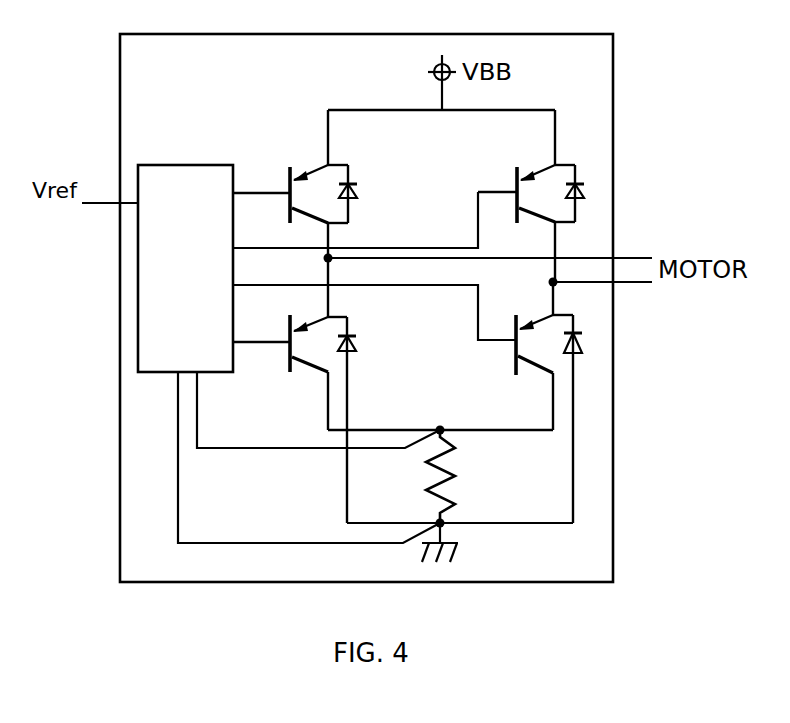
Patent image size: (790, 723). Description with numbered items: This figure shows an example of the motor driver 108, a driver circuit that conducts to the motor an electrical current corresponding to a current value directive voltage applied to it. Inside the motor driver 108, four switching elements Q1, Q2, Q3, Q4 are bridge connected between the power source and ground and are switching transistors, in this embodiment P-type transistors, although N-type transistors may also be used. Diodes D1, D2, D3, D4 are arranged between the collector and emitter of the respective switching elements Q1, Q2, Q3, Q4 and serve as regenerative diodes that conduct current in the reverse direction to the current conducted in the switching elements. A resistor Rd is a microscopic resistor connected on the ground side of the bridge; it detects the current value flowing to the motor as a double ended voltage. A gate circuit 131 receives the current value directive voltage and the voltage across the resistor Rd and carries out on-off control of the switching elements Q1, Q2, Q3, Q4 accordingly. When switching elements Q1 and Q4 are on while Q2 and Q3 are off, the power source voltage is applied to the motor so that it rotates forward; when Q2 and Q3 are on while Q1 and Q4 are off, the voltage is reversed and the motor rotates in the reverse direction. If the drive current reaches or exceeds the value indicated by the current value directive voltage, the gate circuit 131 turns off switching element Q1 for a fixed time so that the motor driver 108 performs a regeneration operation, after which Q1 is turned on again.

The motor driver 108 is at (396, 307).
The gate circuit 131 is at (190, 248).
The switching element Q1 is at (290, 184).
The switching element Q2 is at (290, 344).
The switching element Q3 is at (526, 196).
The switching element Q4 is at (526, 356).
The diode D1 is at (361, 183).
The diode D2 is at (360, 410).
The diode D3 is at (588, 183).
The diode D4 is at (587, 408).
The resistor Rd is at (460, 476).